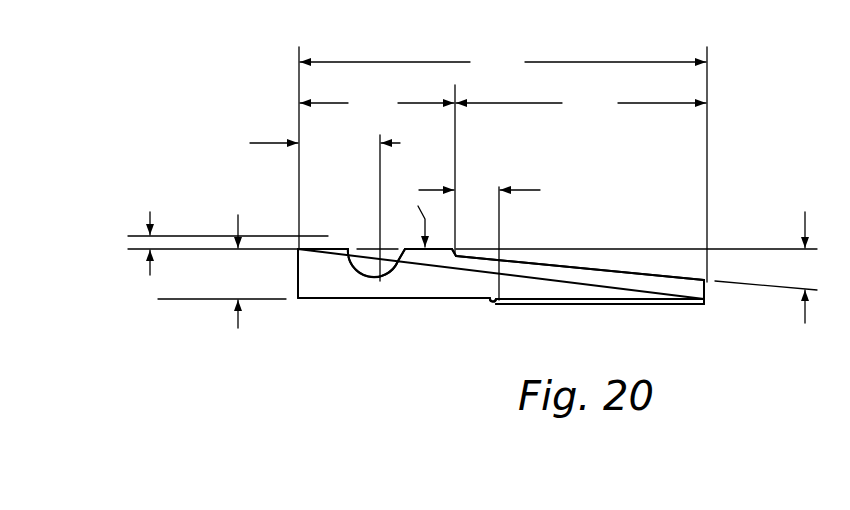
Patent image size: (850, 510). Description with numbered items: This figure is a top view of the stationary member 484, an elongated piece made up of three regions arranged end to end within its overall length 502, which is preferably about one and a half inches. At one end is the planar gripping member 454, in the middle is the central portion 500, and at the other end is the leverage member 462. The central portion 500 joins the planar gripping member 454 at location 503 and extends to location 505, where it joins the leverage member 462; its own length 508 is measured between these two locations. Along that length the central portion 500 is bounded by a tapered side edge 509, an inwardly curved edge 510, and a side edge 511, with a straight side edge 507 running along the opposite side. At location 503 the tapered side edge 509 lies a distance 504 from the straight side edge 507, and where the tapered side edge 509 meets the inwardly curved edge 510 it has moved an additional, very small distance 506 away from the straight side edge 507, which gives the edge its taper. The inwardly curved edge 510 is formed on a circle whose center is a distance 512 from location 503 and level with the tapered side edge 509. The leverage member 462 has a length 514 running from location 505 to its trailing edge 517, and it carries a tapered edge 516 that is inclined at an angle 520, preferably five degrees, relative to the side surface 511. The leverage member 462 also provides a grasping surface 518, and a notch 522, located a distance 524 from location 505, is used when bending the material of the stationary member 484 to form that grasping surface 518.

The central portion 500 is at (335, 282).
The planar gripping member 454 is at (296, 300).
The location 503 is at (292, 246).
The tapered side edge 509 is at (331, 246).
The inwardly curved edge 510 is at (409, 266).
The side edge 511 is at (418, 217).
The location 505 is at (457, 250).
The tapered edge 516 is at (610, 271).
The trailing edge 517 is at (710, 293).
The leverage member 462 is at (679, 296).
The grasping surface 518 is at (613, 306).
The notch 522 is at (493, 302).
The straight side edge 507 is at (409, 302).
The stationary member 484 is at (387, 301).
The length 502 is at (503, 164).
The length 508 is at (377, 169).
The length 514 is at (581, 103).
The distance 512 is at (302, 205).
The distance 524 is at (537, 238).
The distance 506 is at (153, 226).
The distance 504 is at (233, 284).
The angle 520 is at (772, 254).